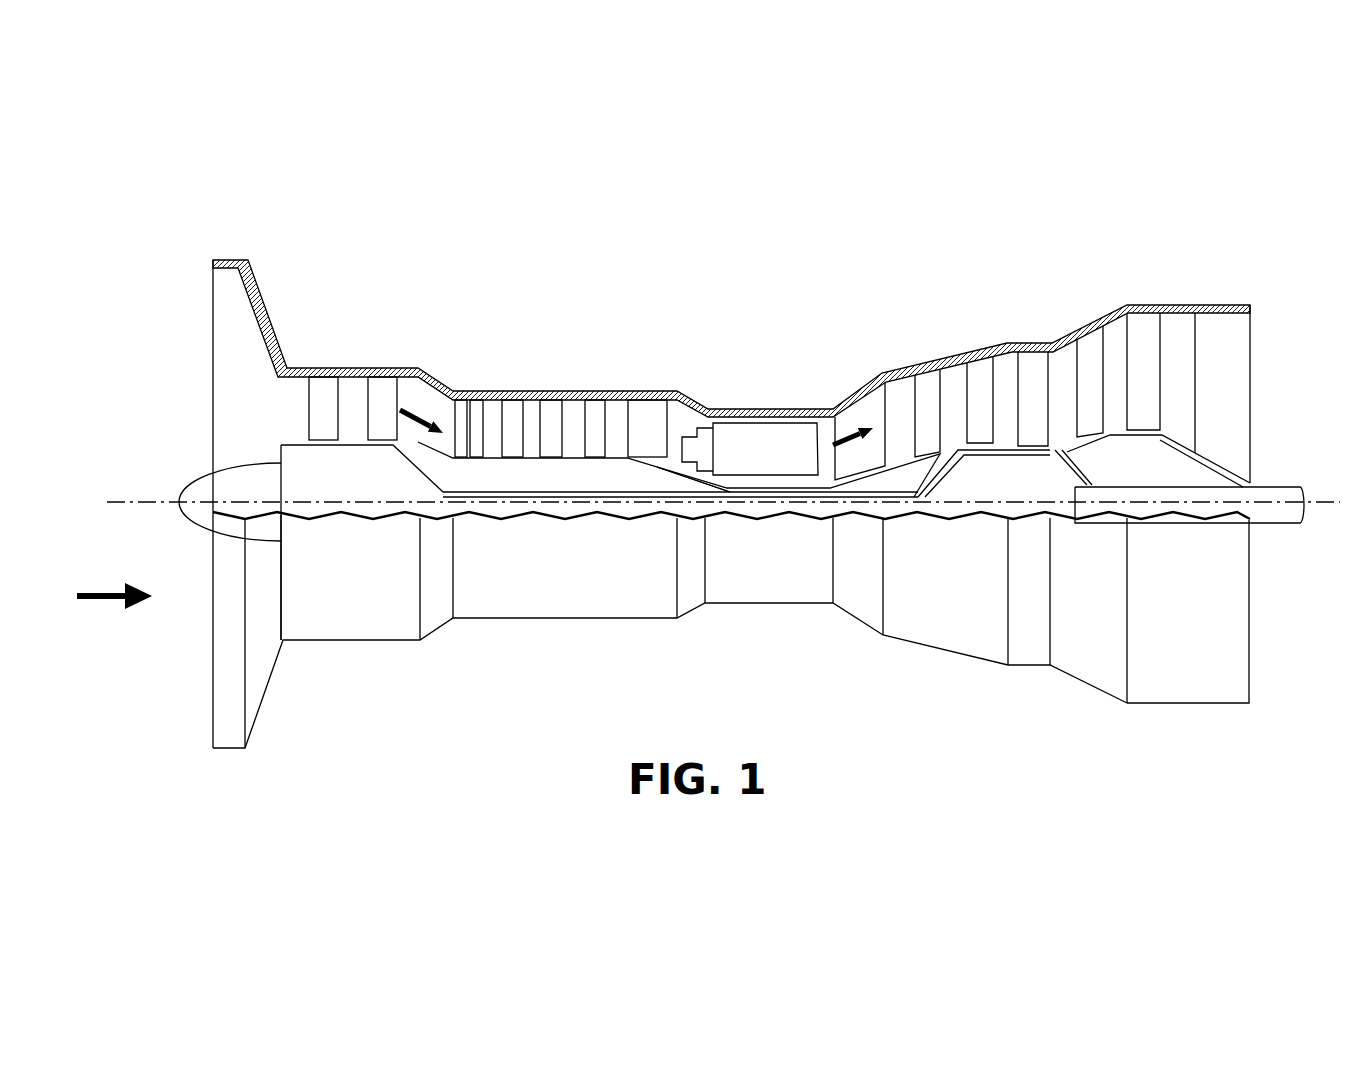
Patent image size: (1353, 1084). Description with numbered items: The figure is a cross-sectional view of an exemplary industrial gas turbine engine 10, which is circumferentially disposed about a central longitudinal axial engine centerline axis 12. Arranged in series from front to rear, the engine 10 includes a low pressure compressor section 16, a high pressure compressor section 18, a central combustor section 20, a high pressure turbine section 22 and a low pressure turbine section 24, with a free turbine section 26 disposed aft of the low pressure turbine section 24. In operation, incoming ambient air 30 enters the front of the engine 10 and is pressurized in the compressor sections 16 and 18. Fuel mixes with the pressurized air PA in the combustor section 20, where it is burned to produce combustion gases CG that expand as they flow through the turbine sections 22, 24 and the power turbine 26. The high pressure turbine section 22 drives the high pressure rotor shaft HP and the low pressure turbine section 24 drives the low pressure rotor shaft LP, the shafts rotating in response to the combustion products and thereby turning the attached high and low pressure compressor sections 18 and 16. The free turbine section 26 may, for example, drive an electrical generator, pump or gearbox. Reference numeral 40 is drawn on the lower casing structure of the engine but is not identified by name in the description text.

The industrial gas turbine engine 10 is at (834, 255).
The axial engine centerline axis 12 is at (150, 501).
The low pressure compressor section 16 is at (344, 354).
The high pressure compressor section 18 is at (587, 365).
The central combustor section 20 is at (742, 448).
The high pressure turbine section 22 is at (930, 335).
The low pressure turbine section 24 is at (1041, 323).
The free turbine section 26 is at (1193, 297).
The incoming ambient air 30 is at (110, 588).
The engine casing 40 is at (1009, 668).
The pressurized air PA is at (420, 400).
The low pressure rotor shaft LP is at (434, 483).
The high pressure rotor shaft HP is at (661, 468).
The combustion gases CG is at (843, 427).